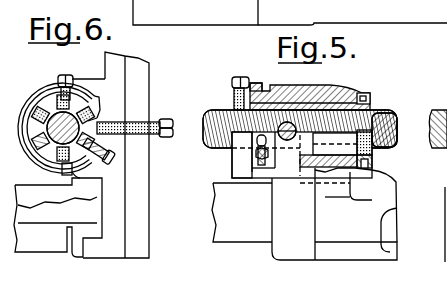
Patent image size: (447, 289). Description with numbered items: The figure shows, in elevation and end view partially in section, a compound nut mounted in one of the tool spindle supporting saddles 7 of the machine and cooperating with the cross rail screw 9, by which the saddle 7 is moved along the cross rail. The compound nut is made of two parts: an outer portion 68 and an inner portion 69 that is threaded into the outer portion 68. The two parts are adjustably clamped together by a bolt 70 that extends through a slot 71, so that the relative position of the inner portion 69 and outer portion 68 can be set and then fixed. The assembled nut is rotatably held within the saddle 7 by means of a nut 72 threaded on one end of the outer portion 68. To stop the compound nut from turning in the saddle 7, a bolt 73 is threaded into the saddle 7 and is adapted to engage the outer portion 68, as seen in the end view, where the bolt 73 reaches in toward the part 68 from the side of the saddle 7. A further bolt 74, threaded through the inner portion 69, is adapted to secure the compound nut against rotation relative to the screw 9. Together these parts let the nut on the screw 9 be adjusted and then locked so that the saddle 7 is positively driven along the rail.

In FIG. 6, the saddle 7 is at (138, 207).
In FIG. 5, the screw 9 is at (440, 150).
In FIG. 5, the outer portion 68 is at (251, 82).
In FIG. 5, the inner portion 69 is at (233, 166).
In FIG. 6, the bolt 70 is at (112, 150).
In FIG. 5, the bolt 70 is at (262, 172).
In FIG. 5, the slot 71 is at (258, 166).
In FIG. 5, the nut 72 is at (366, 96).
In FIG. 6, the bolt 73 is at (173, 125).
In FIG. 5, the bolt 73 is at (292, 168).
In FIG. 6, the bolt 74 is at (60, 78).
In FIG. 5, the bolt 74 is at (232, 80).